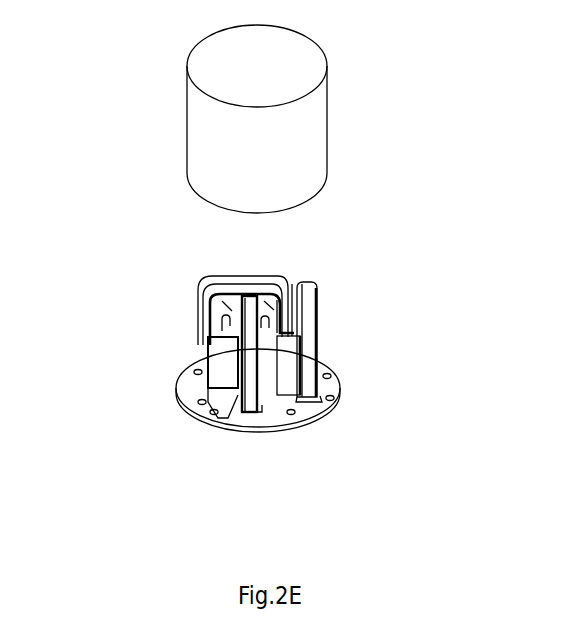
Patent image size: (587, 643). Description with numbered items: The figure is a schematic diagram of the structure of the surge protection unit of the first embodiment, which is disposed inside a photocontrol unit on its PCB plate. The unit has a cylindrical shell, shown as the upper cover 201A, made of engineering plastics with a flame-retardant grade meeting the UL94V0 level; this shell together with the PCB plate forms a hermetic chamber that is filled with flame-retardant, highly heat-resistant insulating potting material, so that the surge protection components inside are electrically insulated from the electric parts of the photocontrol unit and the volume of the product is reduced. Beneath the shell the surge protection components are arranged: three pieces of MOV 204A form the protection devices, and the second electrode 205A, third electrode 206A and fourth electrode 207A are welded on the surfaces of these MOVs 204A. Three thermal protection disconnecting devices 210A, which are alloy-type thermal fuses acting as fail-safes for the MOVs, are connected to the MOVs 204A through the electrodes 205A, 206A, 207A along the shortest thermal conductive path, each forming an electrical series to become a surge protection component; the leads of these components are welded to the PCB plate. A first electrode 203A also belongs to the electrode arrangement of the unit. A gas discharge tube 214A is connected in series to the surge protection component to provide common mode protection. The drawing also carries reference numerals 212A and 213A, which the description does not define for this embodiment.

The upper cover 201A is at (307, 130).
The first electrode 203A is at (247, 273).
The three pieces of MOV 204A is at (315, 305).
The second electrode 205A is at (230, 317).
The third electrode 206A is at (258, 405).
The fourth electrode 207A is at (313, 397).
The three thermal protection disconnecting devices 210A is at (283, 365).
The base plate 212A is at (233, 403).
The block foot 213A is at (205, 405).
The discharge tube 214A is at (223, 355).